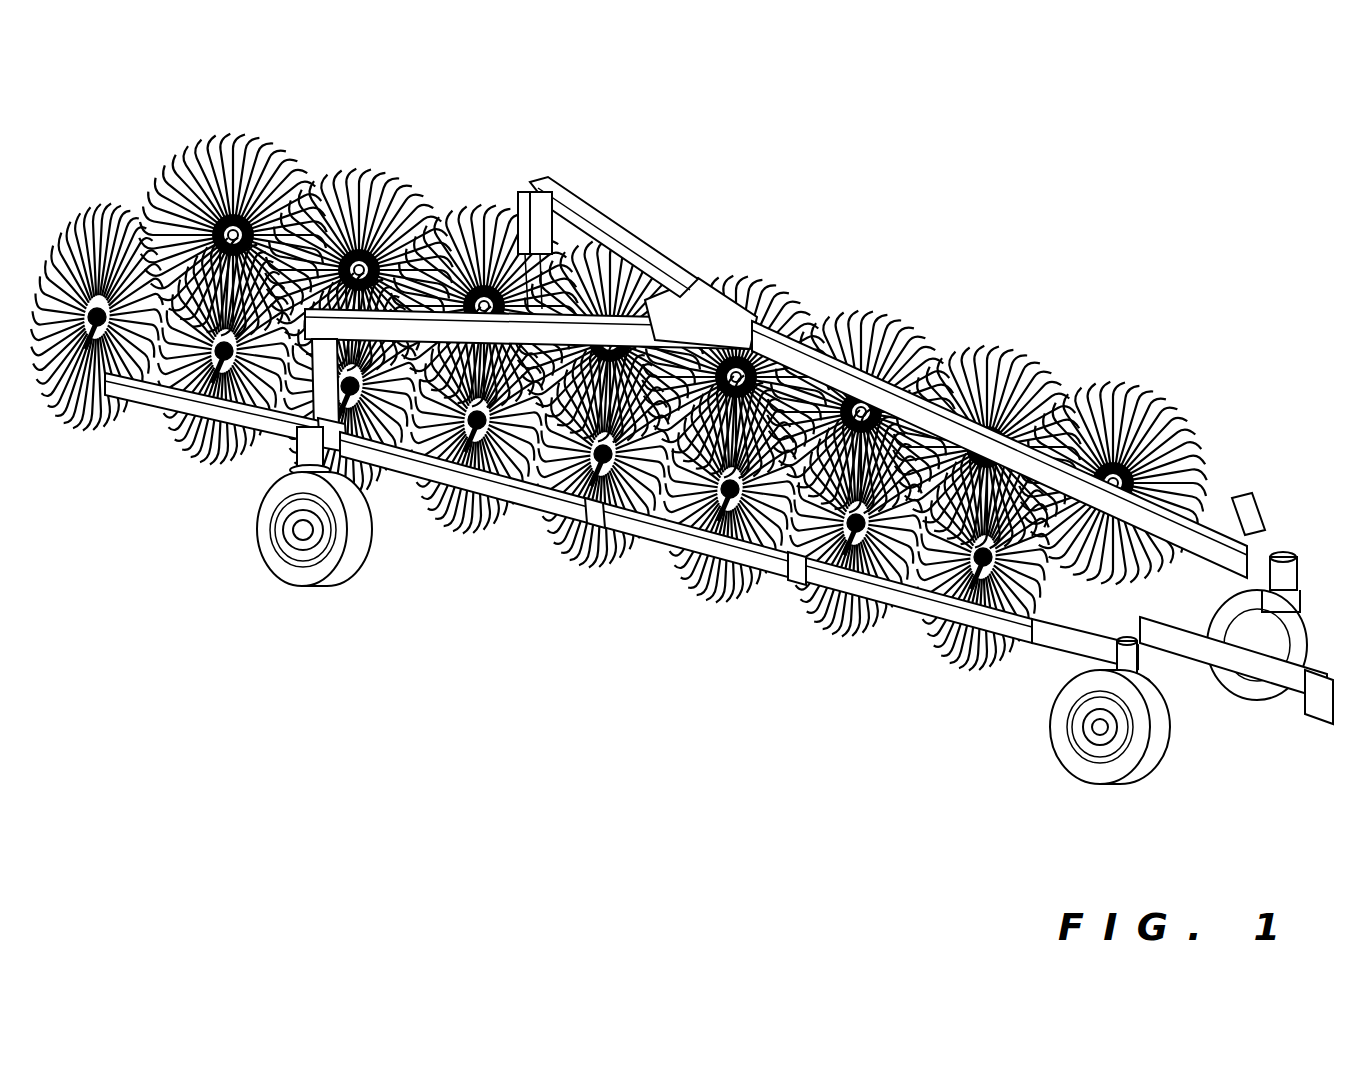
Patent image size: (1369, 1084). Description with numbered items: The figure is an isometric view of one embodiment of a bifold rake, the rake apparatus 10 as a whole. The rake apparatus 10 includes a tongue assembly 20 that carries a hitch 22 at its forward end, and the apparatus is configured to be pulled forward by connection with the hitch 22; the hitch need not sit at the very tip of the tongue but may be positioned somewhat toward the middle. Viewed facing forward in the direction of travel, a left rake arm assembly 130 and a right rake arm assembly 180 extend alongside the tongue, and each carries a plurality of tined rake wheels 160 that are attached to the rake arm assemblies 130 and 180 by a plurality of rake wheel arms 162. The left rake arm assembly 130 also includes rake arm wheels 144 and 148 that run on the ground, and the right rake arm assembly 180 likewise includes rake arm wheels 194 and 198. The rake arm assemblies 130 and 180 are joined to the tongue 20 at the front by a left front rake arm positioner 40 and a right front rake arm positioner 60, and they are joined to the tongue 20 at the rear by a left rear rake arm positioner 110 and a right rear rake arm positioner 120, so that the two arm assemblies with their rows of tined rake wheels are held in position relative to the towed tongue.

The rake apparatus 10 is at (685, 471).
The tongue assembly 20 is at (1280, 683).
The hitch 22 is at (1313, 717).
The left front rake arm positioner 40 is at (1210, 577).
The right front rake arm positioner 60 is at (1130, 627).
The left rear rake arm positioner 110 is at (587, 217).
The right rear rake arm positioner 120 is at (587, 323).
The left rake arm assembly 130 is at (1227, 497).
The rake arm wheel 144 is at (1303, 617).
The rake arm wheel 148 is at (493, 253).
The tined rake wheels 160 is at (613, 557).
The rake wheel arms 162 is at (593, 513).
The right rake arm assembly 180 is at (687, 543).
The rake arm wheel 194 is at (1103, 767).
The rake arm wheel 198 is at (320, 573).